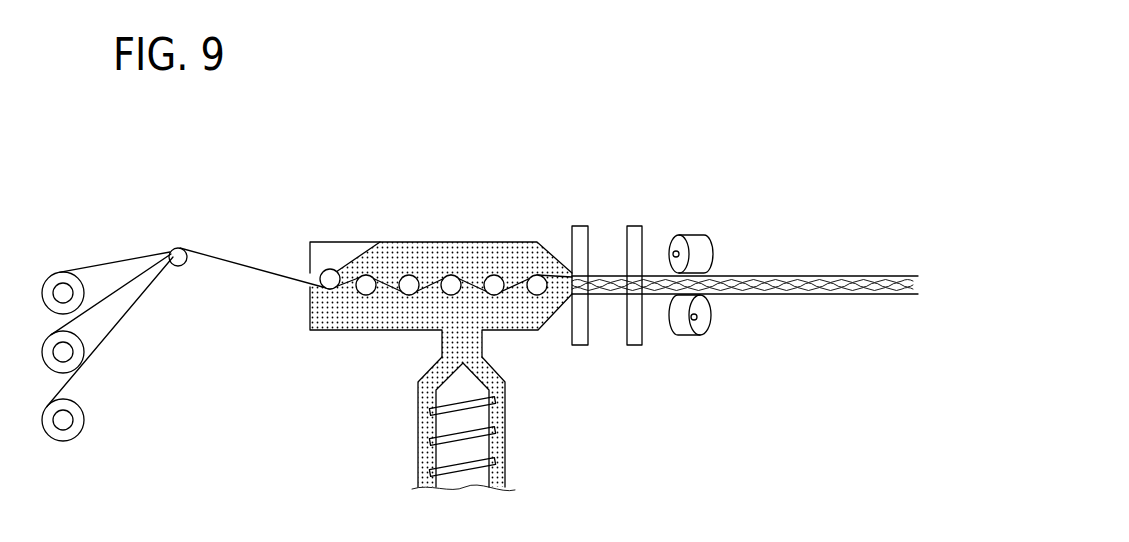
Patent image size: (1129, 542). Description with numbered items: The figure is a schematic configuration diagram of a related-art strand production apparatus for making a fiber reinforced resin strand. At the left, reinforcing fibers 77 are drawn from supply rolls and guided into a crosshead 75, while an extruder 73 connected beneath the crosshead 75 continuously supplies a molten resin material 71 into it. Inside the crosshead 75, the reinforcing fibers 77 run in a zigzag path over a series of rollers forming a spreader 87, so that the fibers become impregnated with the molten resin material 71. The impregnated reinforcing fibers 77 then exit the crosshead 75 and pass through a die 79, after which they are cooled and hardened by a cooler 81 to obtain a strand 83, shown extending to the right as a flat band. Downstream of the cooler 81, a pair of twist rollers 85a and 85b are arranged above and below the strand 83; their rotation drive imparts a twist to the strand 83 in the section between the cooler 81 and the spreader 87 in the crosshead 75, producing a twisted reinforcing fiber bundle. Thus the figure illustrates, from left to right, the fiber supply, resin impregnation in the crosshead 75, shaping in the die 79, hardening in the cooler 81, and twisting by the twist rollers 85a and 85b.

The molten resin material 71 is at (475, 253).
The extruder 73 is at (418, 414).
The crosshead 75 is at (415, 242).
The reinforcing fibers 77 is at (130, 297).
The die 79 is at (580, 226).
The cooler 81 is at (637, 226).
The strand 83 is at (865, 275).
The twist roller 85a is at (692, 235).
The twist roller 85b is at (690, 337).
The spreader 87 is at (535, 294).